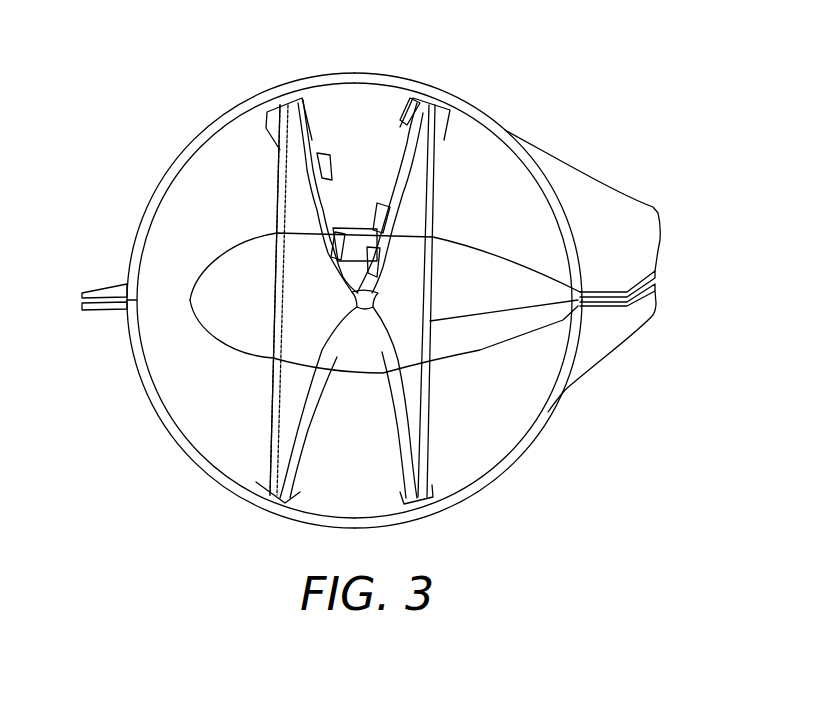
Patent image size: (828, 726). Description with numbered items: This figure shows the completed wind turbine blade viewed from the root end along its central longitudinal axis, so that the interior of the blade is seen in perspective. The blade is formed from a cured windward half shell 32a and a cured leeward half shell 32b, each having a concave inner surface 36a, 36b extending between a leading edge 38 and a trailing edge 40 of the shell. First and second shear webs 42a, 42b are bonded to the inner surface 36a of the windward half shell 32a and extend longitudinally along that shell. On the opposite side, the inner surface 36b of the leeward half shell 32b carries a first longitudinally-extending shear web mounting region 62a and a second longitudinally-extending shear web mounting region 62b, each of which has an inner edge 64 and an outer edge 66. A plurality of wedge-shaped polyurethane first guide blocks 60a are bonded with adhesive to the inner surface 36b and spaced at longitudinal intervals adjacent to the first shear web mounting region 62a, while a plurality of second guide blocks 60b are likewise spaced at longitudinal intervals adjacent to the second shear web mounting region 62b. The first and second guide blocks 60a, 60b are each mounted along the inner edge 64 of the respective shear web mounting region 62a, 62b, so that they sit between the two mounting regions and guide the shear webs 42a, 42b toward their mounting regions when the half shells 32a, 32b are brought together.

The windward half shell 32a is at (228, 490).
The leeward half shell 32b is at (197, 142).
The inner surface of the windward half shell 36a is at (457, 480).
The inner surface of the leeward half shell 36b is at (488, 140).
The leading edge 38 is at (106, 291).
The trailing edge 40 is at (607, 288).
The first shear web 42a is at (430, 380).
The second shear web 42b is at (273, 387).
The first guide blocks 60a is at (413, 97).
The second guide blocks 60b is at (323, 167).
The first shear web mounting region 62a is at (440, 97).
The second shear web mounting region 62b is at (282, 96).
The inner edge 64 is at (398, 150).
The outer edge 66 is at (273, 120).